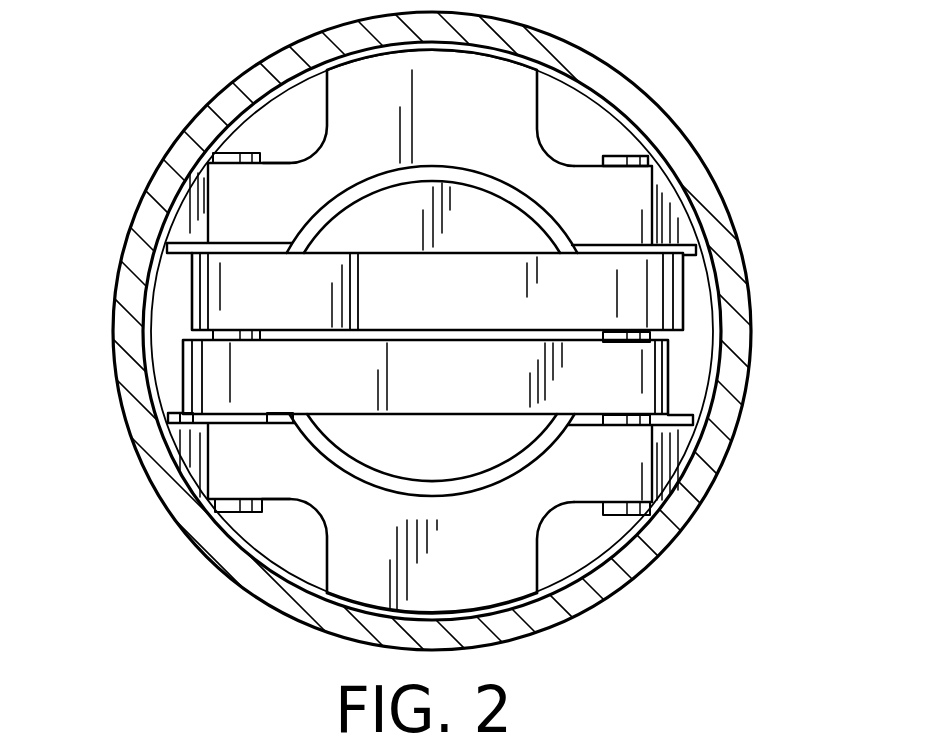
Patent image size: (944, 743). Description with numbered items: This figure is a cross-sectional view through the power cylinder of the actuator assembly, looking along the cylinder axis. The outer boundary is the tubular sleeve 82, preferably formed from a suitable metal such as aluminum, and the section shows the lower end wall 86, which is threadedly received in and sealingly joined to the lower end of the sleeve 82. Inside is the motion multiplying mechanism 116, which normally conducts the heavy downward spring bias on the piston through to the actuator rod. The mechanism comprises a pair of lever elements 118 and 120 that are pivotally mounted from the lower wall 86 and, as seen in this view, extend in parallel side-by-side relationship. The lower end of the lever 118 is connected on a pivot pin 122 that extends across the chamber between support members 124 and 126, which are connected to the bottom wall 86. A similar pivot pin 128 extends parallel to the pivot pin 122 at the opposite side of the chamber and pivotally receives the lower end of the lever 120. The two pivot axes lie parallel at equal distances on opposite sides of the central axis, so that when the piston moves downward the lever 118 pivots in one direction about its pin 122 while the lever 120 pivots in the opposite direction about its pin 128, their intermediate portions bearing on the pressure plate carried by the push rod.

The tubular sleeve 82 is at (613, 83).
The lower end wall 86 is at (571, 547).
The motion multiplying mechanism 116 is at (742, 190).
The lever element 118 is at (637, 375).
The lever element 120 is at (232, 298).
The pivot pin 122 is at (236, 515).
The support member 124 is at (337, 522).
The support member 126 is at (233, 200).
The pivot pin 128 is at (663, 550).